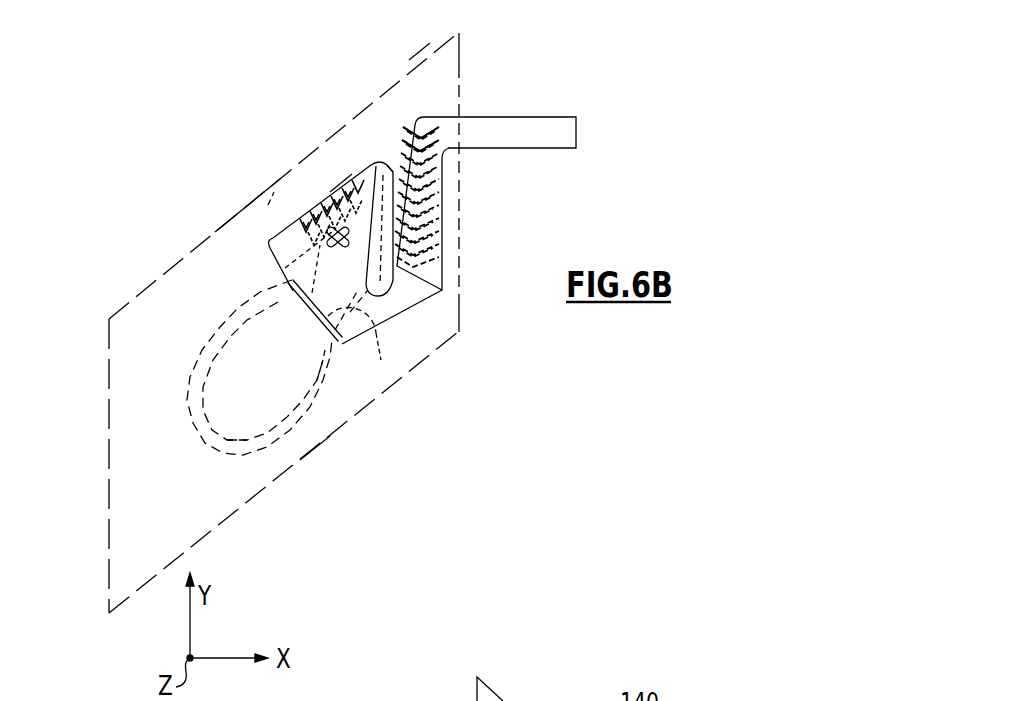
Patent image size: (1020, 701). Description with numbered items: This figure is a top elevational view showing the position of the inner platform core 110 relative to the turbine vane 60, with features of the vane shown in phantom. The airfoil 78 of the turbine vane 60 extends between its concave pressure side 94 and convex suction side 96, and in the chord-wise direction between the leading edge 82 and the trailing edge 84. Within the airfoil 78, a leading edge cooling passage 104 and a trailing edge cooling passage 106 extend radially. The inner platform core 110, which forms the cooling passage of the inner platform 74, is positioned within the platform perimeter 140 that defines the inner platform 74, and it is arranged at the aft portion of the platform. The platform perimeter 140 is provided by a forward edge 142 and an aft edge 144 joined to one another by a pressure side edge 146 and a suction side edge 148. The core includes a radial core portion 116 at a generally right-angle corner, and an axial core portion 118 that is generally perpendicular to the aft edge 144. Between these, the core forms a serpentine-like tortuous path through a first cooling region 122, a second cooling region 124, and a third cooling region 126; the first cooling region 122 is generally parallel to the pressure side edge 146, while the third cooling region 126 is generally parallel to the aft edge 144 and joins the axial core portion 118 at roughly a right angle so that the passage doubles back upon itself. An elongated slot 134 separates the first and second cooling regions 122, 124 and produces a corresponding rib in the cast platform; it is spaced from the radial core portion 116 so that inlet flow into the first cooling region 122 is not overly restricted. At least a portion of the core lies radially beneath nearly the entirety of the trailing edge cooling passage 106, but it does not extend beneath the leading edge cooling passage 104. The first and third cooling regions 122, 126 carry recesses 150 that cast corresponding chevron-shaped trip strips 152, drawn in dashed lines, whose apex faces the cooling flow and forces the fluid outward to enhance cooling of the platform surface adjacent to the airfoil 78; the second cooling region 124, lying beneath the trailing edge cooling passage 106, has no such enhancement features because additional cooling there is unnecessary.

The turbine vane 60 is at (238, 195).
The inner platform 74 is at (240, 524).
The airfoil 78 is at (346, 382).
The leading edge 82 is at (197, 424).
The trailing edge 84 is at (416, 100).
The pressure side 94 is at (262, 292).
The suction side 96 is at (378, 356).
The leading edge cooling passage 104 is at (256, 437).
The trailing edge cooling passage 106 is at (316, 338).
The inner platform core 110 is at (442, 322).
The radial core portion 116 is at (268, 254).
The axial core portion 118 is at (534, 130).
The first cooling region 122 is at (344, 174).
The second cooling region 124 is at (383, 257).
The third cooling region 126 is at (452, 224).
The elongated slot 134 is at (320, 218).
The platform perimeter 140 is at (135, 286).
The forward edge 142 is at (108, 456).
The aft edge 144 is at (460, 78).
The pressure side edge 146 is at (274, 190).
The suction side edge 148 is at (307, 446).
The recesses 150 is at (335, 198).
The trip strips 152 is at (445, 155).